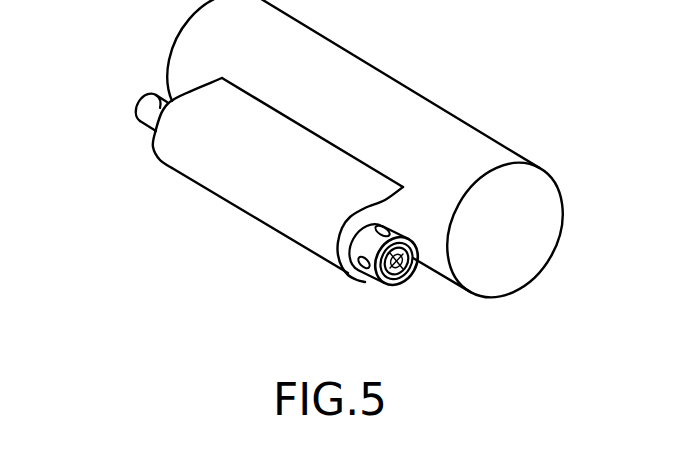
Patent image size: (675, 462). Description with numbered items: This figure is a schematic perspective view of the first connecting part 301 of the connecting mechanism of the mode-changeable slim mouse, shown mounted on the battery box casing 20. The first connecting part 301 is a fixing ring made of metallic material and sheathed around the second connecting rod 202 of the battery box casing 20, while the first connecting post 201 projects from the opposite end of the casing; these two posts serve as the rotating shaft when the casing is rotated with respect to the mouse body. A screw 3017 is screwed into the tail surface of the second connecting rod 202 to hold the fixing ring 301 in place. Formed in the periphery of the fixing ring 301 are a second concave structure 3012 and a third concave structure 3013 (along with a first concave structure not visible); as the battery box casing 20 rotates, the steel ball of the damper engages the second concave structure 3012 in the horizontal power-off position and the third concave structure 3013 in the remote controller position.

The battery box casing 20 is at (323, 58).
The first connecting post 201 is at (150, 112).
The second connecting rod 202 is at (360, 237).
The first connecting part 301 is at (446, 212).
The second concave structure 3012 is at (338, 291).
The third concave structure 3013 is at (387, 227).
The screw 3017 is at (417, 264).